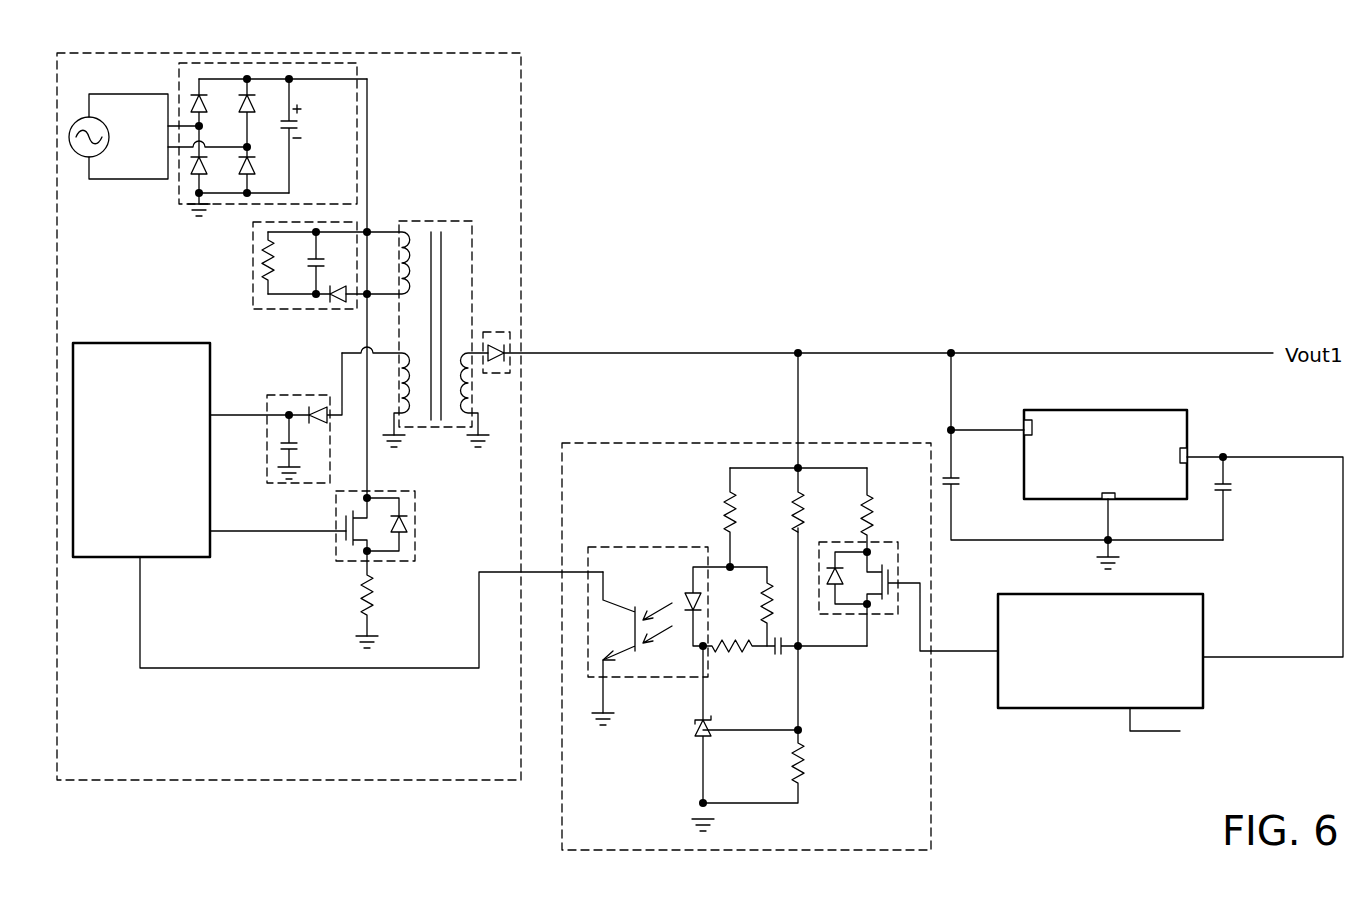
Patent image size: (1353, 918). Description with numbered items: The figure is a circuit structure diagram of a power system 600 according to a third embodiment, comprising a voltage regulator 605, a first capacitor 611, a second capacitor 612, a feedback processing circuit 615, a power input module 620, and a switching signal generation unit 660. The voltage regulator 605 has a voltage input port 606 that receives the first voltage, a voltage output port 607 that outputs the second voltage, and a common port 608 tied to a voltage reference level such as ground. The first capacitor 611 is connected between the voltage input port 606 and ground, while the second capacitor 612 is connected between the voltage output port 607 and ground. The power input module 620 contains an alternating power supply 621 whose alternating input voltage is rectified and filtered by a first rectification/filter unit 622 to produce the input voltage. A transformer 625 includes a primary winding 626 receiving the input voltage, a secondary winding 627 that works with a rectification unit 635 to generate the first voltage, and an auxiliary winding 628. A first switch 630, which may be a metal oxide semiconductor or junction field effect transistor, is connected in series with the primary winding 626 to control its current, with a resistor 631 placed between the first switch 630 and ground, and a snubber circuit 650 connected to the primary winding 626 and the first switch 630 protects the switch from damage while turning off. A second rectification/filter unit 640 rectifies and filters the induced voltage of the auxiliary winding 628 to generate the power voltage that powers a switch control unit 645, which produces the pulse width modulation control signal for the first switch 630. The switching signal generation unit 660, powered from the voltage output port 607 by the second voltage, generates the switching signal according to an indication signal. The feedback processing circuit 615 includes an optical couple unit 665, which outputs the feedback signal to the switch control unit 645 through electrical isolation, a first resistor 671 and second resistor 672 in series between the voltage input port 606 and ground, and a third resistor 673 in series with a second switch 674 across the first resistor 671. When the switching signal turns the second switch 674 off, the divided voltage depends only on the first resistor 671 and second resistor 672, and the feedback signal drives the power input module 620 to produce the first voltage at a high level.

The power system 600 is at (1160, 118).
The voltage regulator 605 is at (1110, 410).
The voltage input port 606 is at (1030, 420).
The voltage output port 607 is at (1190, 452).
The common port 608 is at (1117, 497).
The first capacitor 611 is at (960, 480).
The second capacitor 612 is at (1231, 487).
The feedback processing circuit 615 is at (862, 443).
The power input module 620 is at (521, 100).
The alternating power supply 621 is at (80, 117).
The first rectification/filter unit 622 is at (275, 62).
The transformer 625 is at (472, 247).
The primary winding 626 is at (391, 230).
The secondary winding 627 is at (457, 418).
The auxiliary winding 628 is at (417, 418).
The first switch 630 is at (415, 523).
The resistor 631 is at (375, 605).
The rectification unit 635 is at (510, 332).
The second rectification/filter unit 640 is at (299, 395).
The switch control unit 645 is at (150, 343).
The snubber circuit 650 is at (253, 276).
The switching signal generation unit 660 is at (1042, 708).
The optical couple unit 665 is at (655, 547).
The first resistor 671 is at (801, 514).
The second resistor 672 is at (794, 770).
The third resistor 673 is at (876, 518).
The second switch 674 is at (885, 614).